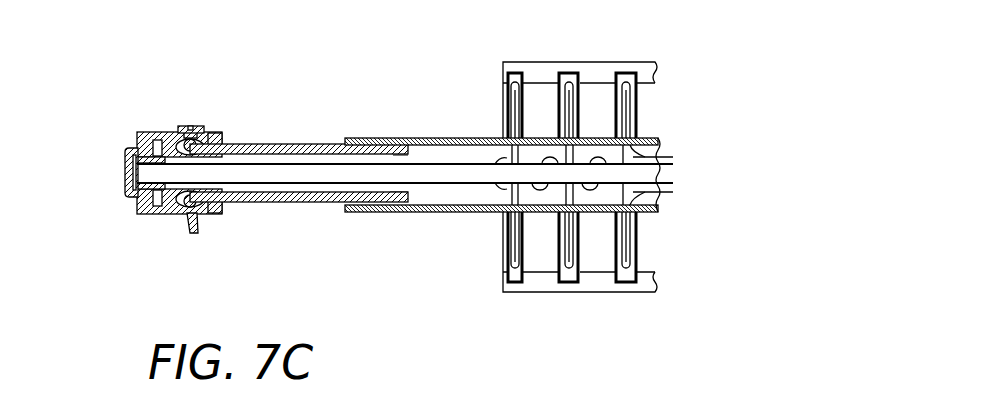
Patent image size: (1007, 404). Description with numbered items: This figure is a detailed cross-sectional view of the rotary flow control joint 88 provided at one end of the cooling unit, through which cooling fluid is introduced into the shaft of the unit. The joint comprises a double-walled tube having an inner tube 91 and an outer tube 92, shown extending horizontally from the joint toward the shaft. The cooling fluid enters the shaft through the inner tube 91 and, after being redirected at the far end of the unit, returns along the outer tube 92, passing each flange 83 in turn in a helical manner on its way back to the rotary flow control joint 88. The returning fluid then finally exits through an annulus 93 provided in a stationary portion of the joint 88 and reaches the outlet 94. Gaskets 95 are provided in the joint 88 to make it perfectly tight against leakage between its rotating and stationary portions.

The flange 83 is at (505, 251).
The rotary flow control joint 88 is at (166, 184).
The inner tube 91 is at (123, 175).
The outer tube 92 is at (290, 144).
The annulus 93 is at (185, 228).
The outlet 94 is at (187, 128).
The gaskets 95 is at (136, 149).